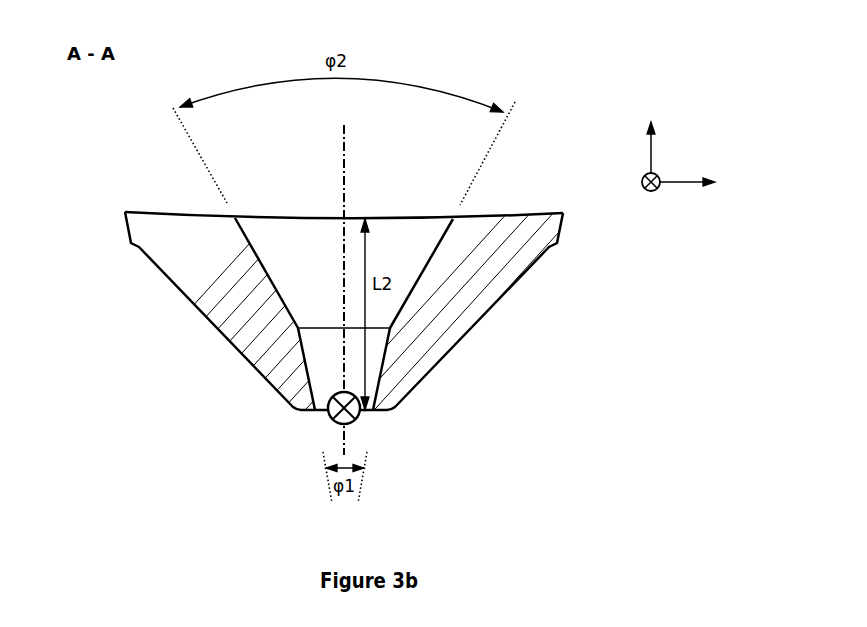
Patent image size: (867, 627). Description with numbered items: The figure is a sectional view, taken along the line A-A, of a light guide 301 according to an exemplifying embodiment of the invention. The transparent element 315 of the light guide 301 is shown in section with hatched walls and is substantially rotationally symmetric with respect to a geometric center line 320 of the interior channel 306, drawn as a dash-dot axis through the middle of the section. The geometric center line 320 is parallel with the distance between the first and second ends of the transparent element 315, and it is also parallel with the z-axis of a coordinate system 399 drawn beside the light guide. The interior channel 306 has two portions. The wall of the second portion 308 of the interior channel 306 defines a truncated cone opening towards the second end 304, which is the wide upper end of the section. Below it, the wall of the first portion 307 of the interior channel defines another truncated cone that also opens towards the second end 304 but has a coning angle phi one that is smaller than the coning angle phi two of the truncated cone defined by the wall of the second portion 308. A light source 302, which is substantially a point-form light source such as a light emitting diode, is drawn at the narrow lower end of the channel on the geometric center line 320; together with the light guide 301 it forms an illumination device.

The light guide 301 is at (122, 227).
The light source 302 is at (356, 419).
The second end 304 is at (380, 215).
The interior channel 306 is at (288, 240).
The first portion of the interior channel 307 is at (354, 368).
The second portion of the interior channel 308 is at (329, 276).
The transparent element 315 is at (227, 280).
The geometric center line 320 is at (344, 168).
The coordinate system 399 is at (658, 216).